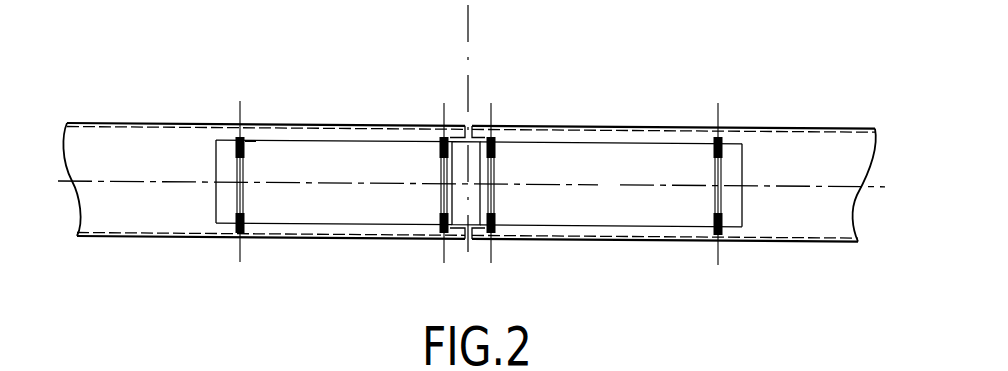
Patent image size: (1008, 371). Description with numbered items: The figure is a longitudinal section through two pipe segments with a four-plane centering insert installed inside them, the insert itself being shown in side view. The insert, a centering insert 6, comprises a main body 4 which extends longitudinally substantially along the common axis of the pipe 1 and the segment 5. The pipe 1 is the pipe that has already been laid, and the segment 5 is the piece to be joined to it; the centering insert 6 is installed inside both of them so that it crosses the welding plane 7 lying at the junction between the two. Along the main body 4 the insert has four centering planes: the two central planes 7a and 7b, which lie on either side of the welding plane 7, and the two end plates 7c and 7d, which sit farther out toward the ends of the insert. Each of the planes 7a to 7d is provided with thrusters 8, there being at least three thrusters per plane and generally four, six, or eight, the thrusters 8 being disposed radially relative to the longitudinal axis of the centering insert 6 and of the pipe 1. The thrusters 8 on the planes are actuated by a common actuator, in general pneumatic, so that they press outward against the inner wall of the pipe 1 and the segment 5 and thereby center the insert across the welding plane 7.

The pipe 1 is at (117, 123).
The main body 4 is at (357, 210).
The segment 5 is at (785, 242).
The centering insert 6 is at (618, 196).
The welding plane 7 is at (468, 17).
The central plane 7a is at (444, 105).
The central plane 7b is at (491, 106).
The end plate 7c is at (240, 112).
The end plate 7d is at (718, 106).
The thrusters 8 is at (250, 143).